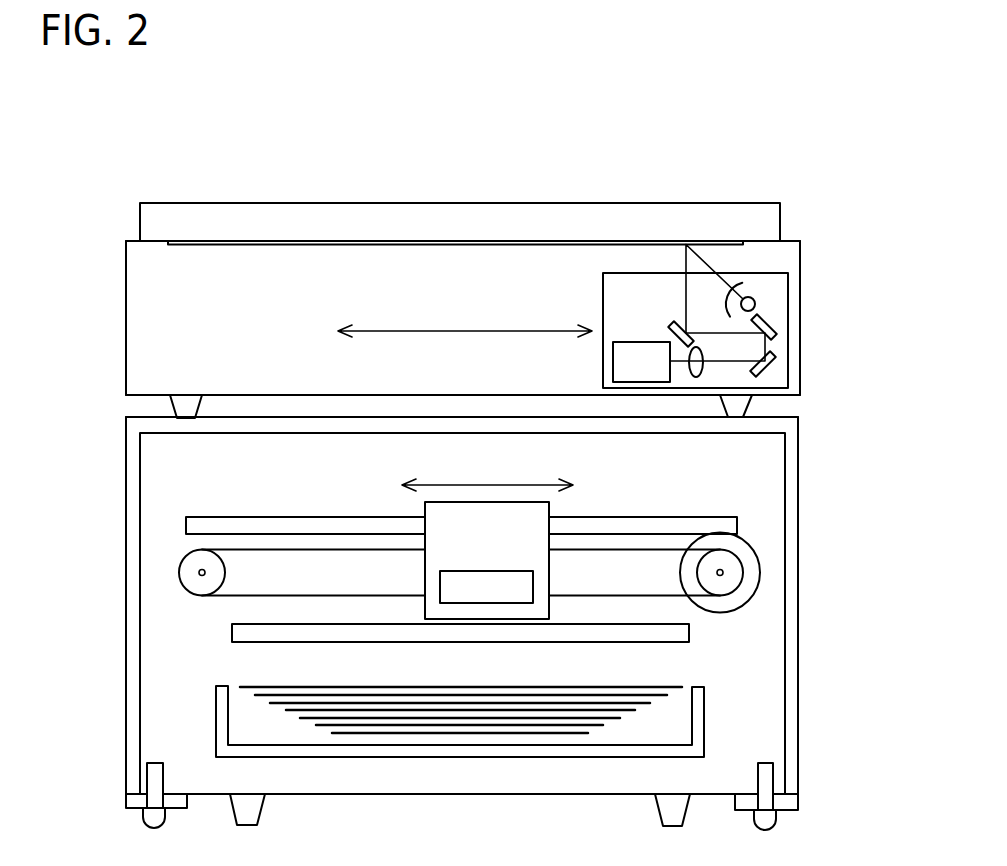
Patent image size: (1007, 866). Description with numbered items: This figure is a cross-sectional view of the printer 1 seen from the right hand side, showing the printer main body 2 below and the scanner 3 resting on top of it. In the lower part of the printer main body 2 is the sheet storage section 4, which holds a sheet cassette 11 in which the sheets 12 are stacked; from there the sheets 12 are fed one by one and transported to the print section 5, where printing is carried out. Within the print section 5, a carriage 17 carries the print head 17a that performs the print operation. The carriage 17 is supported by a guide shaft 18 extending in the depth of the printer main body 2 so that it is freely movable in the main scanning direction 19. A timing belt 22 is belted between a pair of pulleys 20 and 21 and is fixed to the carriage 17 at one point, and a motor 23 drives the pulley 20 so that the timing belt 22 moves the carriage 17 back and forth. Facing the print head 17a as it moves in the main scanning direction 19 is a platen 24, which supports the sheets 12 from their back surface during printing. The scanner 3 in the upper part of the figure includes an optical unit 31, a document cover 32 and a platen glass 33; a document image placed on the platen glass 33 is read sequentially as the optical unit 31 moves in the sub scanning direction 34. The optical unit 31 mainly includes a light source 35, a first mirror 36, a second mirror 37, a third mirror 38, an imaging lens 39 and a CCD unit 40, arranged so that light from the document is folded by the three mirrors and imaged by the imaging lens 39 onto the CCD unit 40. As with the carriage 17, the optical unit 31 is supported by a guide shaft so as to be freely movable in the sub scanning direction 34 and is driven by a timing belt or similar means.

The printer 1 is at (774, 131).
The printer main body 2 is at (132, 668).
The scanner 3 is at (133, 253).
The sheet storage section 4 is at (132, 753).
The print section 5 is at (132, 545).
The sheet cassette 11 is at (220, 713).
The sheets 12 is at (627, 702).
The carriage 17 is at (309, 461).
The print head 17a is at (294, 480).
The guide shaft 18 is at (403, 512).
The main scanning direction 19 is at (495, 485).
The pulley 20 is at (737, 571).
The pulley 21 is at (183, 575).
The timing belt 22 is at (396, 506).
The motor 23 is at (759, 583).
The platen 24 is at (230, 637).
The optical unit 31 is at (783, 317).
The document cover 32 is at (478, 204).
The platen glass 33 is at (312, 243).
The sub scanning direction 34 is at (452, 330).
The light source 35 is at (760, 299).
The first mirror 36 is at (672, 327).
The second mirror 37 is at (775, 332).
The third mirror 38 is at (775, 366).
The imaging lens 39 is at (703, 368).
The CCD unit 40 is at (613, 365).